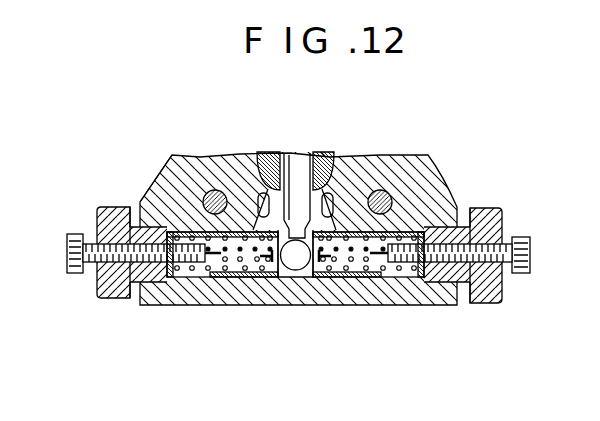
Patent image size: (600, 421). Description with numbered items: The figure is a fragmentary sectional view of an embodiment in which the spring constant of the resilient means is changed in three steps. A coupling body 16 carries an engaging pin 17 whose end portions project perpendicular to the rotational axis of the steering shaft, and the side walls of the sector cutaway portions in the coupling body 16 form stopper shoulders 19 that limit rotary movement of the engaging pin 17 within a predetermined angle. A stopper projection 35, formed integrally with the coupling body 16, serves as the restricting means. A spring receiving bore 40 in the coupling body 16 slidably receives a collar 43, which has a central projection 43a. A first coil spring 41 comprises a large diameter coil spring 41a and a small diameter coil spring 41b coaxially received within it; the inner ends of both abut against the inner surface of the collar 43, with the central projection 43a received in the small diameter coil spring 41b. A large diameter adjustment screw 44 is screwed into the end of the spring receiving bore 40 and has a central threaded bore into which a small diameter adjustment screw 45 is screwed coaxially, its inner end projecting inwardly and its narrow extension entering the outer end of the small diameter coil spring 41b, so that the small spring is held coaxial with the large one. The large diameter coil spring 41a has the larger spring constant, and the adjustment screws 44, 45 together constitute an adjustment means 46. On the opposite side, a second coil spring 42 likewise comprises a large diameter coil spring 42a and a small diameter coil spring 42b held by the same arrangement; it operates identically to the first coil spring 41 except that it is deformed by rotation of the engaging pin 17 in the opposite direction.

The coupling body 16 is at (431, 160).
The engaging pin 17 is at (292, 168).
The stopper shoulders 19 is at (252, 167).
The stopper projection 35 is at (296, 272).
The spring receiving bore 40 is at (171, 198).
The first coil spring 41 is at (402, 306).
The large diameter coil spring 41a is at (454, 289).
The small diameter coil spring 41b is at (390, 280).
The second coil spring 42 is at (189, 306).
The large diameter coil spring 42a is at (139, 289).
The small diameter coil spring 42b is at (216, 298).
The collar 43 is at (240, 272).
The central projection 43a is at (261, 262).
The large diameter adjustment screw 44 is at (110, 207).
The small diameter adjustment screw 45 is at (68, 236).
The adjustment means 46 is at (83, 282).